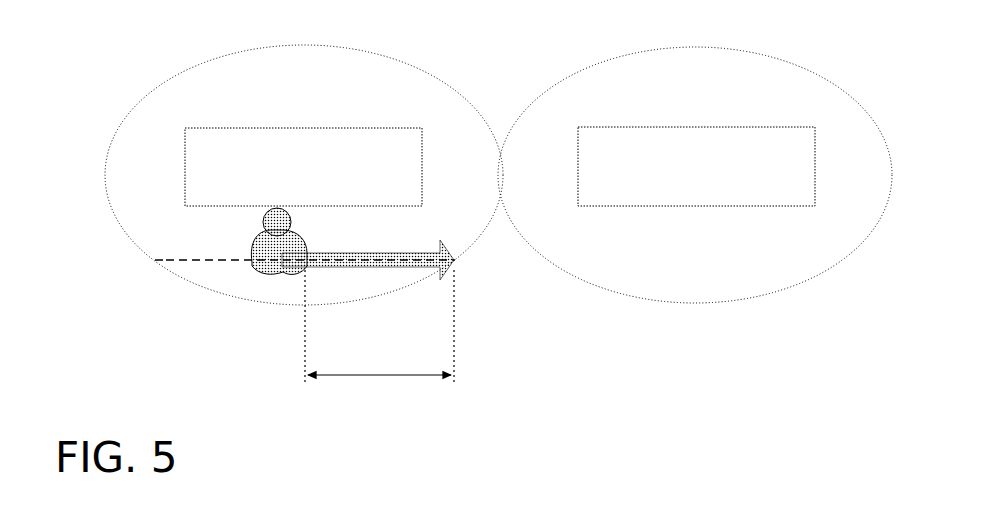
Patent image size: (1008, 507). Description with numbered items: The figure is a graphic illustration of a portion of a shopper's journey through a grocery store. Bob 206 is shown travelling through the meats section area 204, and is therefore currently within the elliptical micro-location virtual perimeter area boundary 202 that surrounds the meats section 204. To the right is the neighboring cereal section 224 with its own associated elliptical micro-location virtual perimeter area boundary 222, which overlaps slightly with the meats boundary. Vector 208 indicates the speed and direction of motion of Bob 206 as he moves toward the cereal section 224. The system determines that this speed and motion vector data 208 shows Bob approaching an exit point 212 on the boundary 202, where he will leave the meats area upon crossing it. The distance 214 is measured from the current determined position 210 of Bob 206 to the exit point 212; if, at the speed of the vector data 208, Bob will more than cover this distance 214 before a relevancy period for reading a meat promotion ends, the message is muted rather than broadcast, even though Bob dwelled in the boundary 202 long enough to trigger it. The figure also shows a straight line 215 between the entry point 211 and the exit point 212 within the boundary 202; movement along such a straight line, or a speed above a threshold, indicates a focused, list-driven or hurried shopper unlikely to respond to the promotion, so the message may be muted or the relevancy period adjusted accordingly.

The elliptical micro-location virtual perimeter area boundary 202 is at (183, 75).
The meats section area 204 is at (308, 127).
The Bob 206 is at (254, 264).
The vector 208 is at (402, 268).
The current determined position 210 is at (300, 278).
The exit point 212 is at (460, 266).
The distance 214 is at (402, 377).
The straight line 215 is at (212, 254).
The entry point 211 is at (150, 265).
The elliptical micro-location virtual perimeter area boundary 222 is at (680, 303).
The cereal section 224 is at (697, 127).